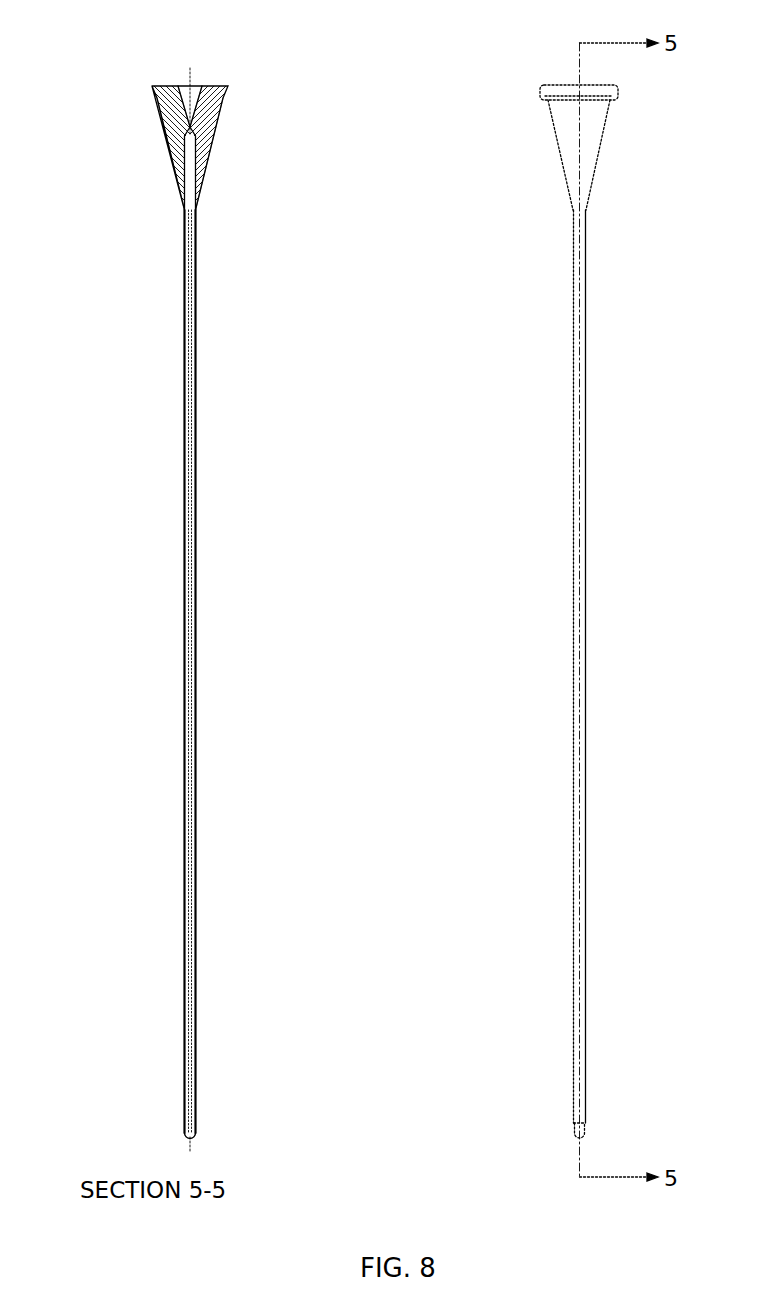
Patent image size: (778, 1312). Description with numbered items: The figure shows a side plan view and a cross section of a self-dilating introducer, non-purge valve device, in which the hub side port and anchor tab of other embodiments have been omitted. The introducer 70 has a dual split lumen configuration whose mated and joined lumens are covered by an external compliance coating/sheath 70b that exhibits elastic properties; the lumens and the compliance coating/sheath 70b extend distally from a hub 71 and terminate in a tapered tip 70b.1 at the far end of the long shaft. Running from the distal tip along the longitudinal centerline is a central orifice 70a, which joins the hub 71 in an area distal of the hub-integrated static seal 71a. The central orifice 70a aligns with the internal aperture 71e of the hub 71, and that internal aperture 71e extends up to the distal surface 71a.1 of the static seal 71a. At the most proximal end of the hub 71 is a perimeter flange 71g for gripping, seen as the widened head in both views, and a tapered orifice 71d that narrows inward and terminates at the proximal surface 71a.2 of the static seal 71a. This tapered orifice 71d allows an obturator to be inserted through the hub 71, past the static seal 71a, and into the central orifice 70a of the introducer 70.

The introducer 70 is at (197, 343).
The central orifice 70a is at (183, 407).
The external compliance coating/sheath 70b is at (183, 507).
The tapered tip 70b.1 is at (185, 1131).
The hub 71 is at (228, 87).
The static seal 71a is at (208, 132).
The distal surface of the static seal 71a.1 is at (210, 152).
The proximal surface of the static seal 71a.2 is at (165, 133).
The tapered orifice 71d is at (190, 82).
The internal aperture 71e is at (170, 143).
The perimeter flange 71g is at (618, 98).